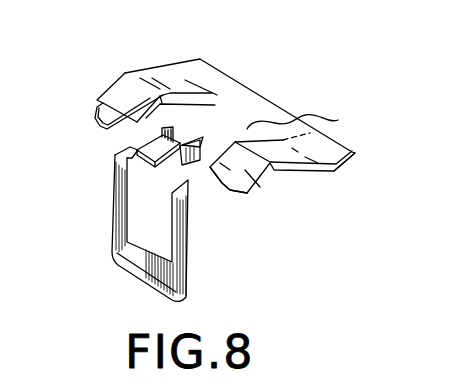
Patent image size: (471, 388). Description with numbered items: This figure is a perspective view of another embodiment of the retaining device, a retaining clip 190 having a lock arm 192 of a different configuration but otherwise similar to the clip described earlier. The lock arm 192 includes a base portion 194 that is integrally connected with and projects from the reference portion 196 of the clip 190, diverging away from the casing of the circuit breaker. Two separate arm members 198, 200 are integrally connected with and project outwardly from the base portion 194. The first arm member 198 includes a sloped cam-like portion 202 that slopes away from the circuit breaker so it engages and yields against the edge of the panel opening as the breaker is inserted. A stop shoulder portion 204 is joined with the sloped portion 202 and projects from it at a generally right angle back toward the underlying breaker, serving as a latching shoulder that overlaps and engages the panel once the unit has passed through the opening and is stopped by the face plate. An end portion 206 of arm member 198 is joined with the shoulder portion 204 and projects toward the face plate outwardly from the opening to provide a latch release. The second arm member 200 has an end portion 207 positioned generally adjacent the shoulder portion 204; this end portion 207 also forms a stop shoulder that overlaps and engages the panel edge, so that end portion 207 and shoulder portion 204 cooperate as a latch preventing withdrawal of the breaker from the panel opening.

The retaining clip 190 is at (288, 110).
The lock arm 192 is at (229, 122).
The base portion 194 is at (310, 120).
The reference portion 196 is at (347, 150).
The arm member 198 is at (147, 147).
The second arm member 200 is at (203, 147).
The sloped cam-like portion 202 is at (195, 127).
The stop shoulder portion 204 is at (140, 121).
The end portion 206 is at (216, 94).
The end portion 207 is at (210, 190).